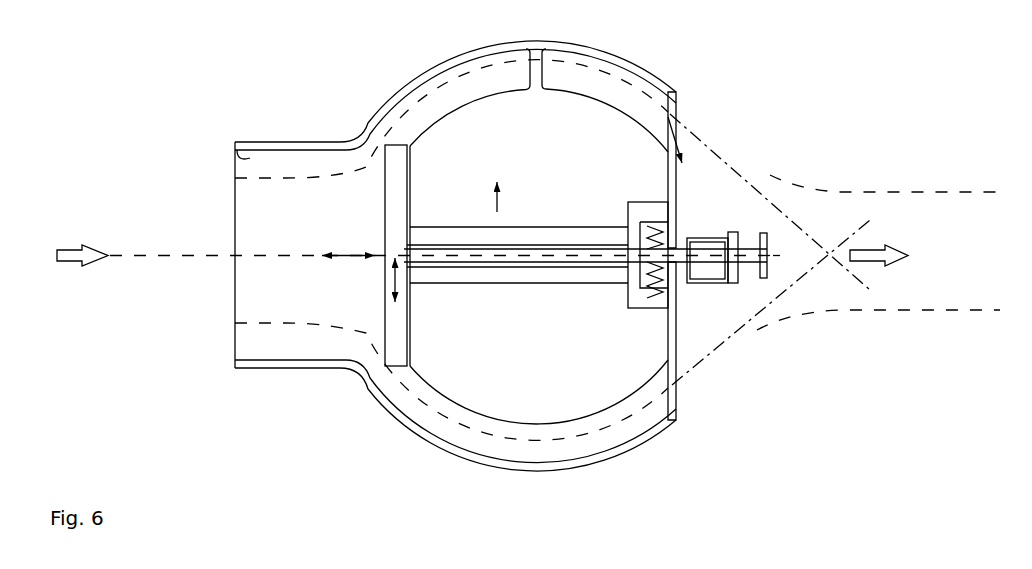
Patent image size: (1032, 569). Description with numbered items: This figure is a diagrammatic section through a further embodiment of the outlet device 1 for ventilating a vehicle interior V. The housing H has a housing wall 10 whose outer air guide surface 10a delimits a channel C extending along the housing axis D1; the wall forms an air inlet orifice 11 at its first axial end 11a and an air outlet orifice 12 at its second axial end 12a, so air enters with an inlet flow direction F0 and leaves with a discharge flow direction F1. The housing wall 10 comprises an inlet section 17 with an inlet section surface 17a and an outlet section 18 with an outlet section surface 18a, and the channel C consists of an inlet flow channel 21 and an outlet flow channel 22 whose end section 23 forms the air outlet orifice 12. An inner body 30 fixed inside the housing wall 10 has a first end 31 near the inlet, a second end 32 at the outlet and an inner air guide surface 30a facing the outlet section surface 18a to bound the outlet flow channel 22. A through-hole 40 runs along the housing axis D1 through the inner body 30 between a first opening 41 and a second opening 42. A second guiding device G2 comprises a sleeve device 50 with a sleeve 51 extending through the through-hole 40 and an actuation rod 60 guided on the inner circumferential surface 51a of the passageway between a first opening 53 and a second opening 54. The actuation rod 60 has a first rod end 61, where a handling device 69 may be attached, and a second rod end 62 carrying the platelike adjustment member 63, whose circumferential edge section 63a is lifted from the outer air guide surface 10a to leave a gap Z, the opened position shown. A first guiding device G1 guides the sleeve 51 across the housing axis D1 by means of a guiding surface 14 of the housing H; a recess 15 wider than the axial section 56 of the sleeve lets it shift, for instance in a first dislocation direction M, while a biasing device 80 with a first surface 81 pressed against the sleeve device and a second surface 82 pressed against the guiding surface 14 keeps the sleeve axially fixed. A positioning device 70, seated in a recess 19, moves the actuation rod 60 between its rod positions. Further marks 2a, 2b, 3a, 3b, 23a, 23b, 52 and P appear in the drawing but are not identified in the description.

The outlet device 1 is at (742, 52).
The housing wall 10 is at (657, 90).
The outer air guide surface 10a is at (275, 158).
The air inlet orifice 11 is at (218, 217).
The first axial end 11a is at (187, 180).
The air outlet orifice 12 is at (706, 152).
The second axial end 12a is at (842, 178).
The guiding surface 14 is at (662, 226).
The recess 15 is at (688, 238).
The inlet section 17 is at (235, 156).
The inlet section surface 17a is at (267, 155).
The outlet section 18 is at (598, 68).
The outlet section surface 18a is at (676, 103).
The recess 19 is at (628, 302).
The inlet flow channel 21 is at (295, 158).
The outlet flow channel 22 is at (558, 60).
The end section 23 is at (664, 437).
The liner outer edge 23a is at (482, 444).
The liner segment end 23b is at (676, 122).
The lower outlet boundary 2a is at (845, 312).
The upper outlet boundary 2b is at (820, 180).
The lower flow cone line 3a is at (740, 332).
The upper flow cone line 3b is at (758, 185).
The inner body 30 is at (648, 423).
The inner air guide surface 30a is at (597, 413).
The first end 31 is at (395, 338).
The second end 32 is at (707, 353).
The through-hole 40 is at (541, 226).
The first opening 41 is at (405, 230).
The second opening 42 is at (662, 214).
The sleeve device 50 is at (472, 246).
The sleeve 51 is at (430, 248).
The inner circumferential surface 51a is at (452, 256).
The valve head 52 is at (746, 238).
The first opening 53 is at (382, 252).
The second opening 54 is at (640, 226).
The axial section 56 is at (665, 295).
The actuation rod 60 is at (553, 268).
The first rod end 61 is at (372, 263).
The second rod end 62 is at (778, 246).
The adjustment member 63 is at (387, 188).
The circumferential edge section 63a is at (397, 140).
The handling device 69 is at (773, 273).
The positioning device 70 is at (718, 272).
The biasing device 80 is at (640, 310).
The first surface 81 is at (668, 240).
The second surface 82 is at (628, 230).
The channel C is at (293, 317).
The housing axis D1 is at (278, 257).
The inlet flow direction F0 is at (70, 260).
The discharge flow direction F1 is at (879, 236).
The first guiding device G1 is at (684, 300).
The second guiding device G2 is at (507, 348).
The housing H is at (640, 56).
The first dislocation direction M is at (500, 207).
The focal point P is at (845, 207).
The vehicle interior V is at (842, 23).
The gap Z is at (373, 146).